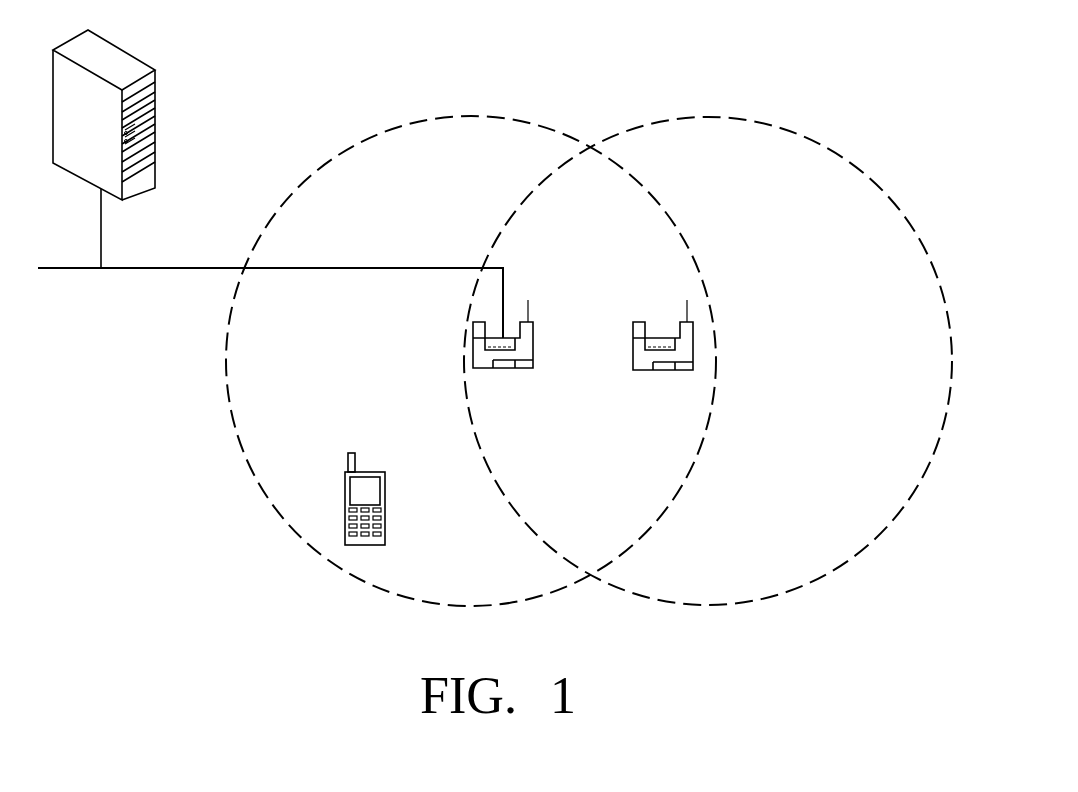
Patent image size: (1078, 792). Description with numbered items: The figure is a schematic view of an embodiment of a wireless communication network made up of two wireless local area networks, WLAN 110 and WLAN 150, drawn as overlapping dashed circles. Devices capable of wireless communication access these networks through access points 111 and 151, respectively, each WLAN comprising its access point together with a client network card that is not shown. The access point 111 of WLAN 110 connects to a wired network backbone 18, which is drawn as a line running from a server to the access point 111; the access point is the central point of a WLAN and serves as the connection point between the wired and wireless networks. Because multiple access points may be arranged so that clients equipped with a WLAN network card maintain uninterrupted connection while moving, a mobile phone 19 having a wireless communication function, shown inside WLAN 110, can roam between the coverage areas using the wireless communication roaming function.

The wired network backbone 18 is at (210, 268).
The mobile phone 19 is at (345, 535).
The wireless local area network 110 is at (542, 128).
The access point 111 is at (535, 347).
The wireless local area network 150 is at (843, 158).
The access point 151 is at (693, 343).